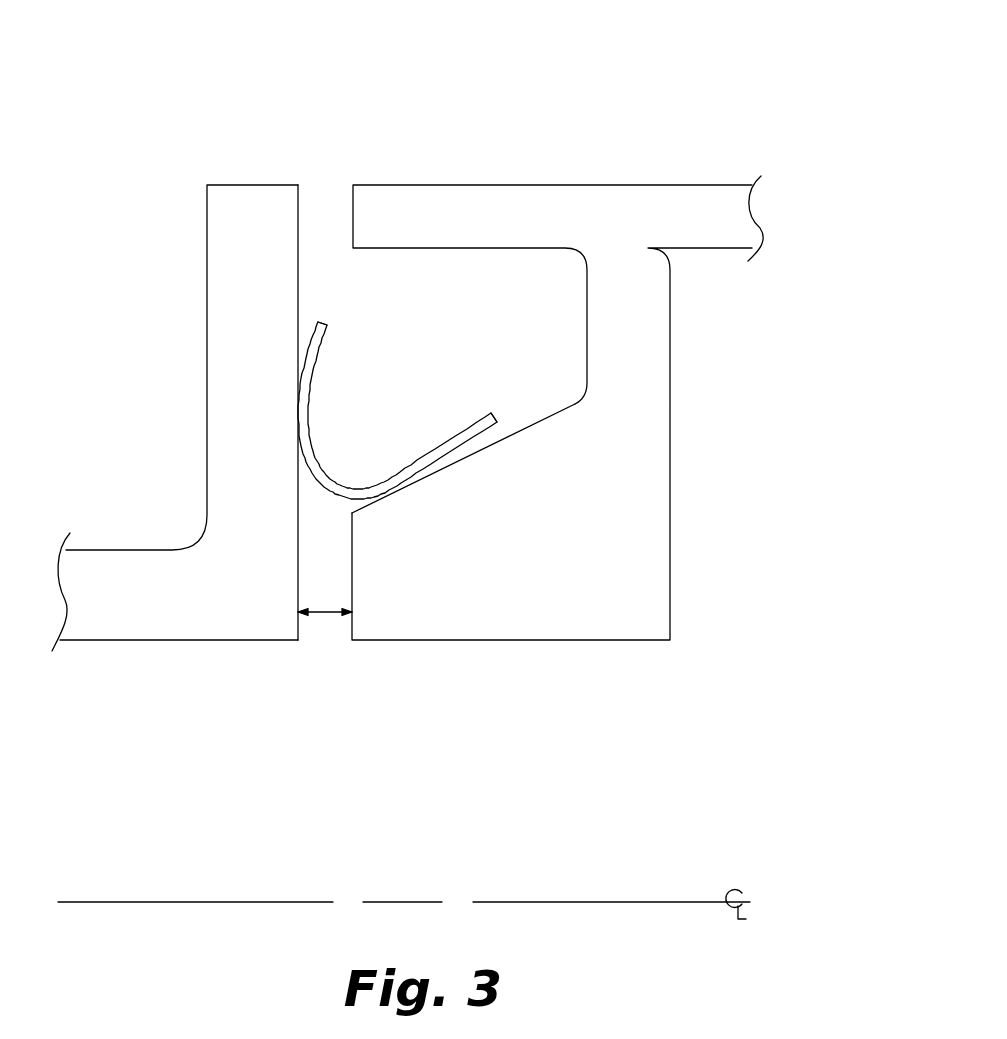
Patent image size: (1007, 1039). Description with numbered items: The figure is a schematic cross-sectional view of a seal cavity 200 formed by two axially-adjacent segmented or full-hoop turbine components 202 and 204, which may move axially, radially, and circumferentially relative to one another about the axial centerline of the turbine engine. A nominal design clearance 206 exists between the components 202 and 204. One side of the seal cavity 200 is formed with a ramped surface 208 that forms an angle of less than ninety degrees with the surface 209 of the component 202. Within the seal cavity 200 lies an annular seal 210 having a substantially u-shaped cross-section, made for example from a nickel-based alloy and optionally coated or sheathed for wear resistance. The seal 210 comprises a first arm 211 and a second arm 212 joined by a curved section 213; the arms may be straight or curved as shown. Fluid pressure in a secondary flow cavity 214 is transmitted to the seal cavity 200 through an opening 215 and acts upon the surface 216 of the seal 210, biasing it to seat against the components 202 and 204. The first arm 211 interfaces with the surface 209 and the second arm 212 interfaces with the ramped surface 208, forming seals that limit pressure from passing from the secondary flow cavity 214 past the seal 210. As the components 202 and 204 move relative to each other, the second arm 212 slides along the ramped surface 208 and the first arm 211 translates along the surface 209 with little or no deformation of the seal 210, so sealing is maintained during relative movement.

The seal cavity 200 is at (447, 287).
The first turbine component 202 is at (173, 641).
The second turbine component 204 is at (512, 641).
The nominal design clearance 206 is at (322, 617).
The ramped surface 208 is at (543, 413).
The surface of the first component 209 is at (298, 233).
The annular seal 210 is at (390, 350).
The first arm 211 is at (342, 297).
The second arm 212 is at (469, 431).
The curved section 213 is at (322, 478).
The secondary flow cavity 214 is at (448, 69).
The opening 215 is at (320, 198).
The surface of the seal 216 is at (403, 460).